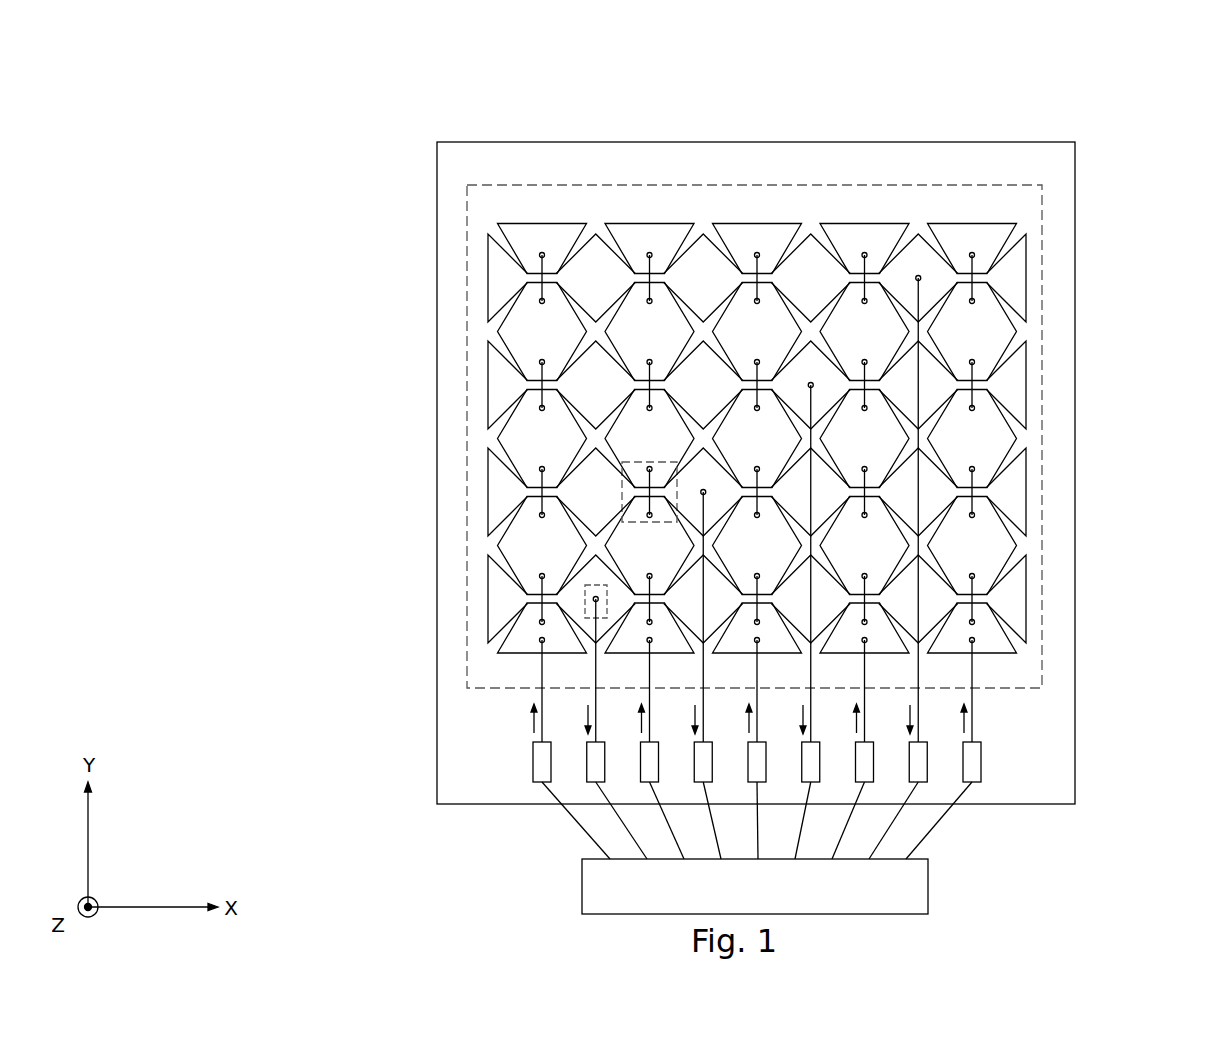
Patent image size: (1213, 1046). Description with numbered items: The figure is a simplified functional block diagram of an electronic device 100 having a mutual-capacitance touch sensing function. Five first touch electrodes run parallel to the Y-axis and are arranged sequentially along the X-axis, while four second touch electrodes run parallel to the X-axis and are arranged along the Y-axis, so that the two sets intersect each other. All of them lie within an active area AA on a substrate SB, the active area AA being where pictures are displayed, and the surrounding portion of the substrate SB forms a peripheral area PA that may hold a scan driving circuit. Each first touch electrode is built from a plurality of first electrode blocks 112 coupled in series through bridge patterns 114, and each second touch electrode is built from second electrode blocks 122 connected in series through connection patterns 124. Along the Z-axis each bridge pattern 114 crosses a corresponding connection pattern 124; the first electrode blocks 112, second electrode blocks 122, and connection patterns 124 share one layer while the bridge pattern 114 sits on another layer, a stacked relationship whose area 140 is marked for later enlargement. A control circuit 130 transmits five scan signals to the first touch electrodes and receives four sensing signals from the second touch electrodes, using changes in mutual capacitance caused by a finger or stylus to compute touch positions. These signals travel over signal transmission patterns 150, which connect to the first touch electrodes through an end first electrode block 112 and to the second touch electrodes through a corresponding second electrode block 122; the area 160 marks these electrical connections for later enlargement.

The electronic device 100 is at (138, 102).
The first electrode block 112 is at (633, 316).
The bridge pattern 114 is at (527, 223).
The second electrode block 122 is at (703, 230).
The connection pattern 124 is at (857, 268).
The control circuit 130 is at (848, 898).
The area 140 is at (620, 464).
The signal transmission pattern 150 is at (918, 683).
The area 160 is at (587, 585).
The substrate SB is at (1075, 473).
The active area AA is at (929, 185).
The peripheral area PA is at (1025, 150).